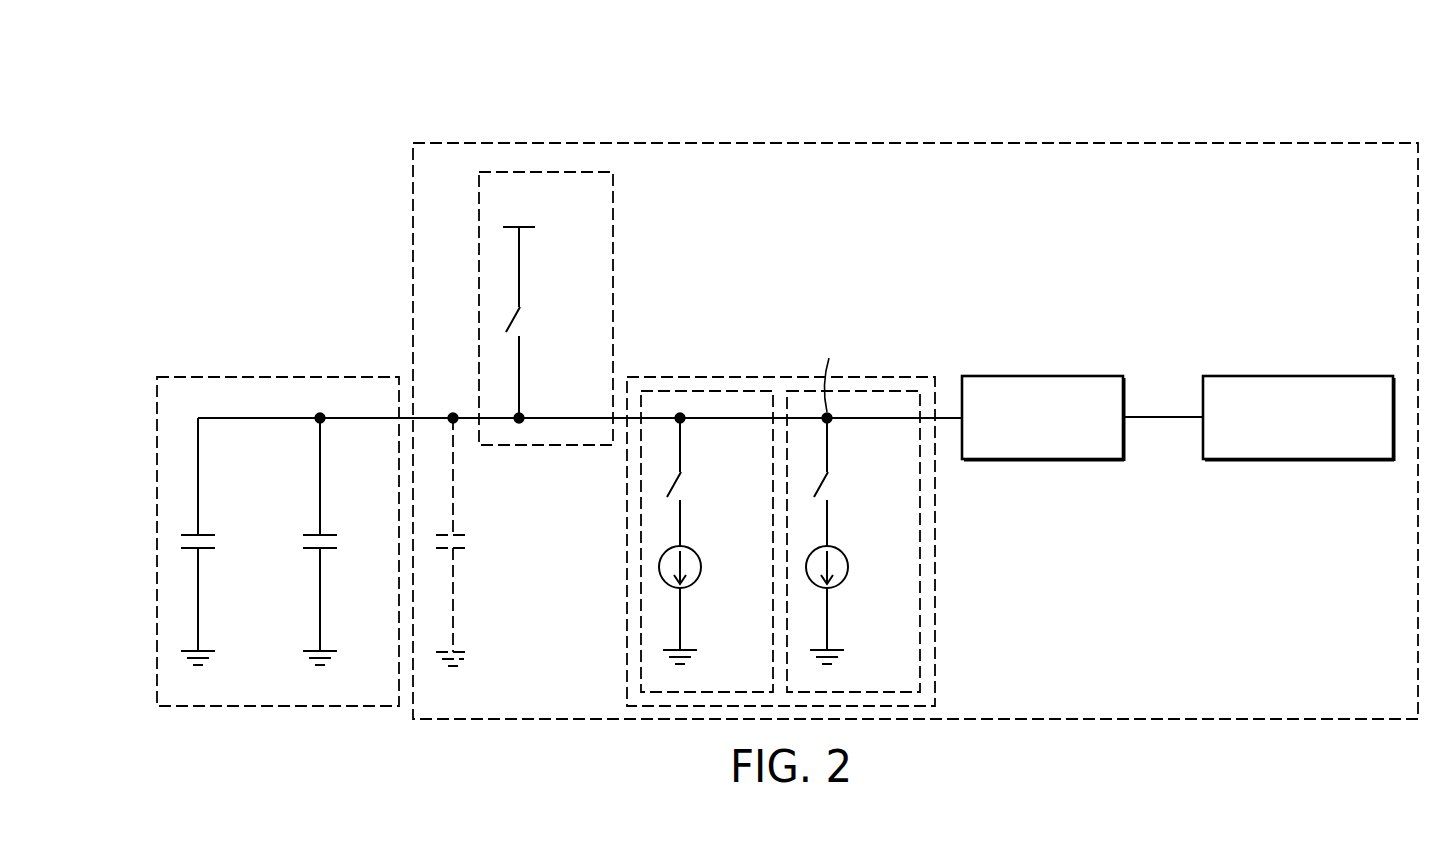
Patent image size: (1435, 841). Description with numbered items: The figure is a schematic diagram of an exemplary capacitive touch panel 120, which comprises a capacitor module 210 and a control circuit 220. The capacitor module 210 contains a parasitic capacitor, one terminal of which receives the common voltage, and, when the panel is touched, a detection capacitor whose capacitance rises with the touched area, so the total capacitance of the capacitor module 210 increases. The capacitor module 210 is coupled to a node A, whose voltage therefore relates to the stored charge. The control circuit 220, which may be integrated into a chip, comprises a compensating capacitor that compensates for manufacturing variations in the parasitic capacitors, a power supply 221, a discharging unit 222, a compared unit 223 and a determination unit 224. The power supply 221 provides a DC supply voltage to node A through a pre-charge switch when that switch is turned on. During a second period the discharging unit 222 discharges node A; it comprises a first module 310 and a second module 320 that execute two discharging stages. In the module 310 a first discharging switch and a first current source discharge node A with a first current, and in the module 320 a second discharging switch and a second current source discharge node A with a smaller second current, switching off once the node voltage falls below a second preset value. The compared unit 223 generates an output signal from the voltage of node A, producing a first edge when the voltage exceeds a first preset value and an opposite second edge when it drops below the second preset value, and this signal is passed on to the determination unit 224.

The touch panel 120 is at (266, 114).
The capacitor module 210 is at (306, 377).
The control circuit 220 is at (1215, 143).
The power supply 221 is at (613, 225).
The discharging unit 222 is at (869, 377).
The compared unit 223 is at (1043, 376).
The determination unit 224 is at (1283, 376).
The module 310 is at (640, 623).
The module 320 is at (920, 623).